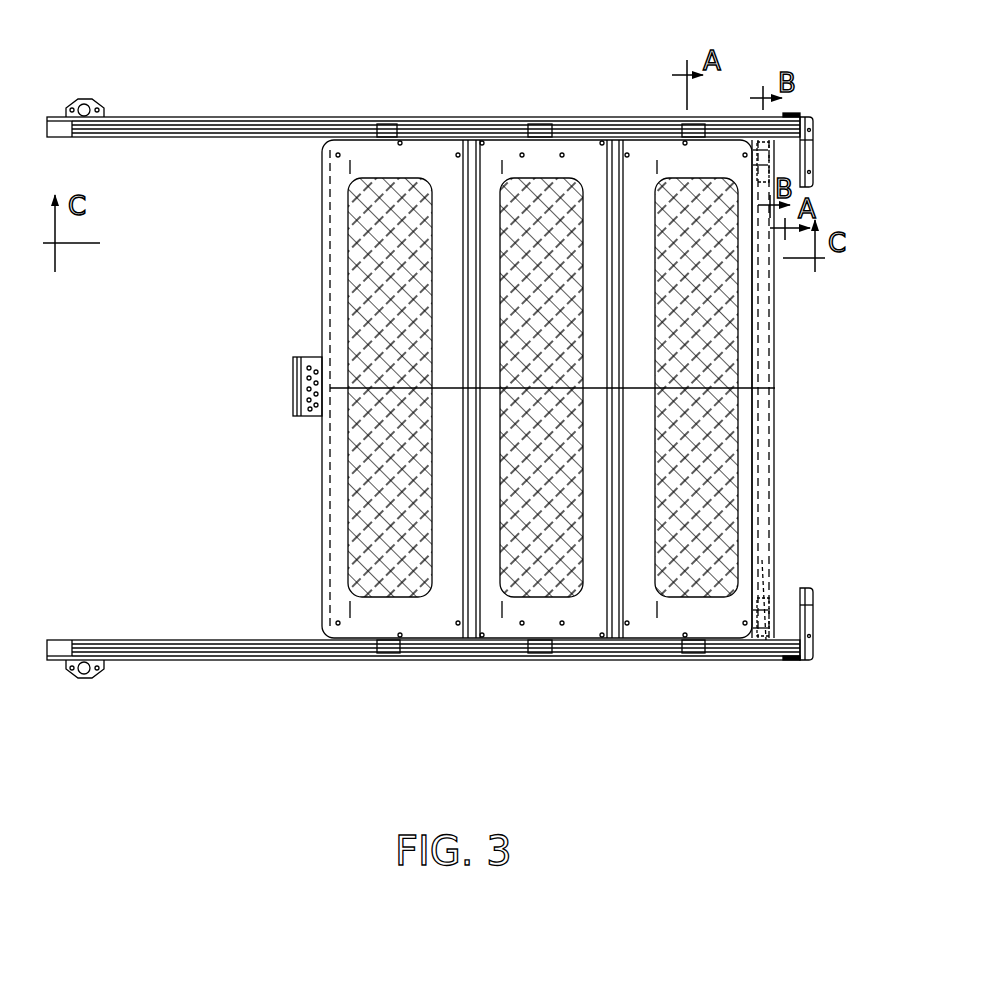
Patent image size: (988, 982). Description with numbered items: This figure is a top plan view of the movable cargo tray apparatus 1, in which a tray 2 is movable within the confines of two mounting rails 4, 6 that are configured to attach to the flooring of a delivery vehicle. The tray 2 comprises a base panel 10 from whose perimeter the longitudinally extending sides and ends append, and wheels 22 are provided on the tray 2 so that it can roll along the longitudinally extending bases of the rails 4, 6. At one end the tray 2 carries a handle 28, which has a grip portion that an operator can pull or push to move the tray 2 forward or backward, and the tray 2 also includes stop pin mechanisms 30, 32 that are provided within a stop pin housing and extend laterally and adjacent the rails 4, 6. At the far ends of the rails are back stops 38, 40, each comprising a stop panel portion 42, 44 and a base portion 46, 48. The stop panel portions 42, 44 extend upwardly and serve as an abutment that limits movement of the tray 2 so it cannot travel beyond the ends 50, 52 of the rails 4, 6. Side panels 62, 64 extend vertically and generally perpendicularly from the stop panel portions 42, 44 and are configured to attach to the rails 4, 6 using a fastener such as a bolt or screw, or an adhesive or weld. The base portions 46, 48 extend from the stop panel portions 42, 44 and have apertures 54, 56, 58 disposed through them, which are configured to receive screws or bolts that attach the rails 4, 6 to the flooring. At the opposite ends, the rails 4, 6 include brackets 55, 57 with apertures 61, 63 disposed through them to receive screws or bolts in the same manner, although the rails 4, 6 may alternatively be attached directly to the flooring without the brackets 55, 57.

The movable cargo tray apparatus 1 is at (590, 66).
The tray 2 is at (783, 418).
The mounting rail 4 is at (350, 106).
The mounting rail 6 is at (258, 664).
The base panel 10 is at (458, 356).
The wheels 22 is at (396, 124).
The handle 28 is at (290, 408).
The stop pin mechanism 30 is at (772, 150).
The stop pin mechanism 32 is at (760, 606).
The back stop 38 is at (837, 101).
The back stop 40 is at (826, 624).
The stop panel portion 42 is at (758, 172).
The stop panel portion 44 is at (756, 626).
The base portion 46 is at (814, 130).
The base portion 48 is at (814, 606).
The end of rail 50 is at (814, 120).
The end of rail 52 is at (790, 650).
The aperture 54 is at (814, 142).
The bracket 55 is at (76, 106).
The aperture 56 is at (814, 172).
The bracket 57 is at (74, 678).
The aperture 58 is at (808, 596).
The aperture 61 is at (90, 104).
The side panel 62 is at (795, 113).
The aperture 63 is at (96, 678).
The side panel 64 is at (782, 658).